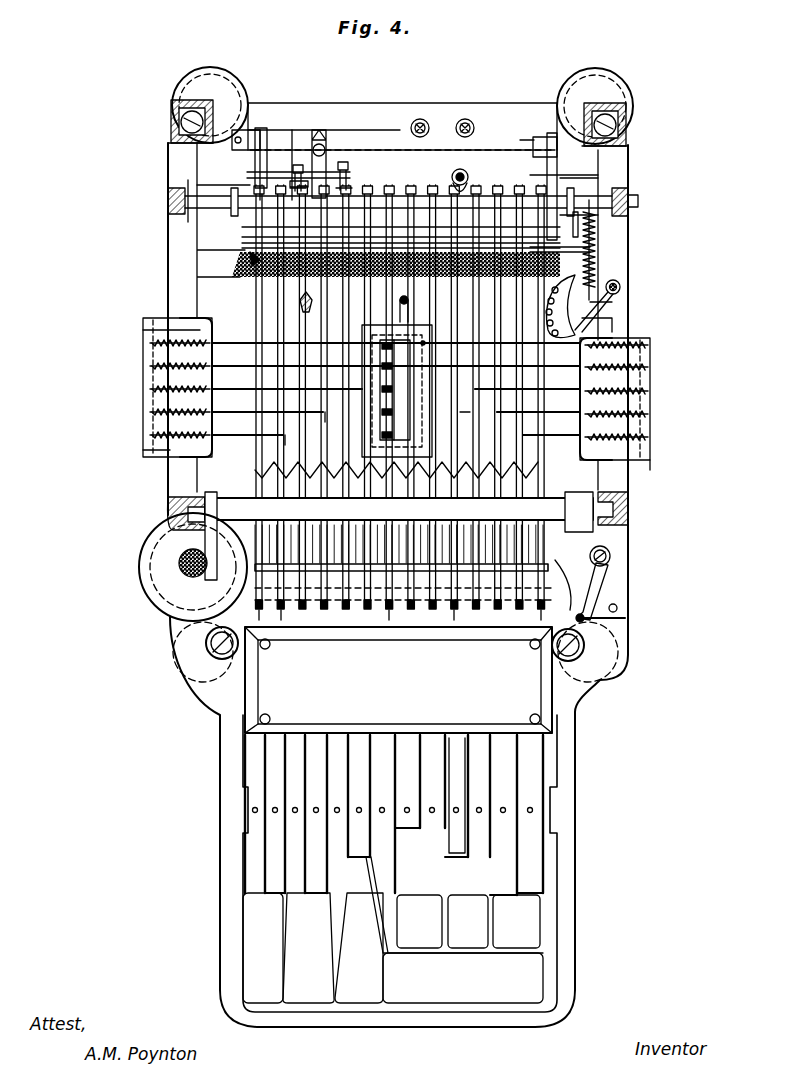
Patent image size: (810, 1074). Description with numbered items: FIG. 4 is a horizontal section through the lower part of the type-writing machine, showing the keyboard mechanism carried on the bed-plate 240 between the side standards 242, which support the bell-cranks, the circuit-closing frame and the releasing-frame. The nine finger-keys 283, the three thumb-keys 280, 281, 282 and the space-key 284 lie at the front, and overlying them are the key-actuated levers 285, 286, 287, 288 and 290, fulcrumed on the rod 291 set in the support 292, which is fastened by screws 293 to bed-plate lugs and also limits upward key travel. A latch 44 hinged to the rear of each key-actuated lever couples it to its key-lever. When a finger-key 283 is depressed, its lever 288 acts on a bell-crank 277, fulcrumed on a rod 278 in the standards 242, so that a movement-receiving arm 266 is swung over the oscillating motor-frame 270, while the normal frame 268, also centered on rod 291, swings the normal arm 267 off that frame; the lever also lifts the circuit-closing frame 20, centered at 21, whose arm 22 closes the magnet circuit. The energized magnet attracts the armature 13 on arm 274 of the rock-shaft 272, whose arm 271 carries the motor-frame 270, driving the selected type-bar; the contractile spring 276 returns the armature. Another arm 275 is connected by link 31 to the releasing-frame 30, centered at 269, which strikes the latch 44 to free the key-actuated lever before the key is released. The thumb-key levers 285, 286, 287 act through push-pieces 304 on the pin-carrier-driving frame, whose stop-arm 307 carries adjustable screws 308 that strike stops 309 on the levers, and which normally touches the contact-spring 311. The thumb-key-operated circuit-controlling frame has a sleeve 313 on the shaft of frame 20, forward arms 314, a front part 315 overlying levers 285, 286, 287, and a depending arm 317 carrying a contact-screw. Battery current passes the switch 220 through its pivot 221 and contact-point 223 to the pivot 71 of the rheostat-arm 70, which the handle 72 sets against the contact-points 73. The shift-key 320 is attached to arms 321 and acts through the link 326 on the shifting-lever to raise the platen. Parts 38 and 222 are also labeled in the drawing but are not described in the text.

The armature 13 is at (170, 580).
The circuit-closing frame 20 is at (508, 125).
The center of circuit-closing frame 21 is at (166, 148).
The arm of circuit-closing frame 22 is at (548, 137).
The releasing-frame 30 is at (548, 185).
The link 31 is at (590, 260).
The bar 38 is at (600, 178).
The releasing arm or latch 44 is at (468, 182).
The rheostat-arm 70 is at (621, 298).
The pivot of rheostat-arm 71 is at (615, 320).
The handle 72 is at (620, 284).
The contact-points 73 is at (560, 297).
The switch 220 is at (602, 580).
The pivot of switch 221 is at (608, 558).
The link 222 is at (600, 614).
The contact-point of switch 223 is at (590, 612).
The bed-plate 240 is at (522, 100).
The side standards 242 is at (171, 125).
The movement-receiving arms 266 is at (392, 438).
The normal movement-receiving arm 267 is at (424, 340).
The normal frame 268 is at (283, 652).
The center of releasing-frame 269 is at (168, 202).
The oscillating motor-frame 270 is at (412, 405).
The arm of rock-shaft 271 is at (399, 509).
The rock-shaft 272 is at (221, 525).
The arm of rock-shaft 274 is at (207, 548).
The arm of rock-shaft 275 is at (566, 508).
The contractile spring 276 is at (600, 250).
The bell-cranks 277 is at (143, 385).
The rods 278 is at (165, 325).
The thumb-key 280 is at (362, 1005).
The thumb-key 281 is at (305, 1005).
The thumb-key 282 is at (255, 973).
The finger-keys 283 is at (415, 830).
The space-key 284 is at (455, 858).
The key-actuated lever 285 is at (345, 665).
The key-actuated lever 286 is at (284, 612).
The key-actuated lever 287 is at (262, 612).
The key-actuated levers 288 is at (389, 612).
The key-actuated lever 290 is at (454, 612).
The rod 291 is at (564, 572).
The support 292 is at (245, 627).
The screws 293 is at (218, 658).
The push-pieces 304 is at (253, 262).
The stop-arm 307 is at (290, 182).
The screws 308 is at (298, 163).
The stops 309 is at (352, 175).
The contact-spring 311 is at (327, 130).
The sleeve 313 is at (276, 128).
The forward-extending arms 314 is at (242, 230).
The front part 315 is at (242, 245).
The depending arm 317 is at (262, 125).
The shift-key 320 is at (460, 1005).
The arms 321 is at (378, 948).
The link 326 is at (410, 305).